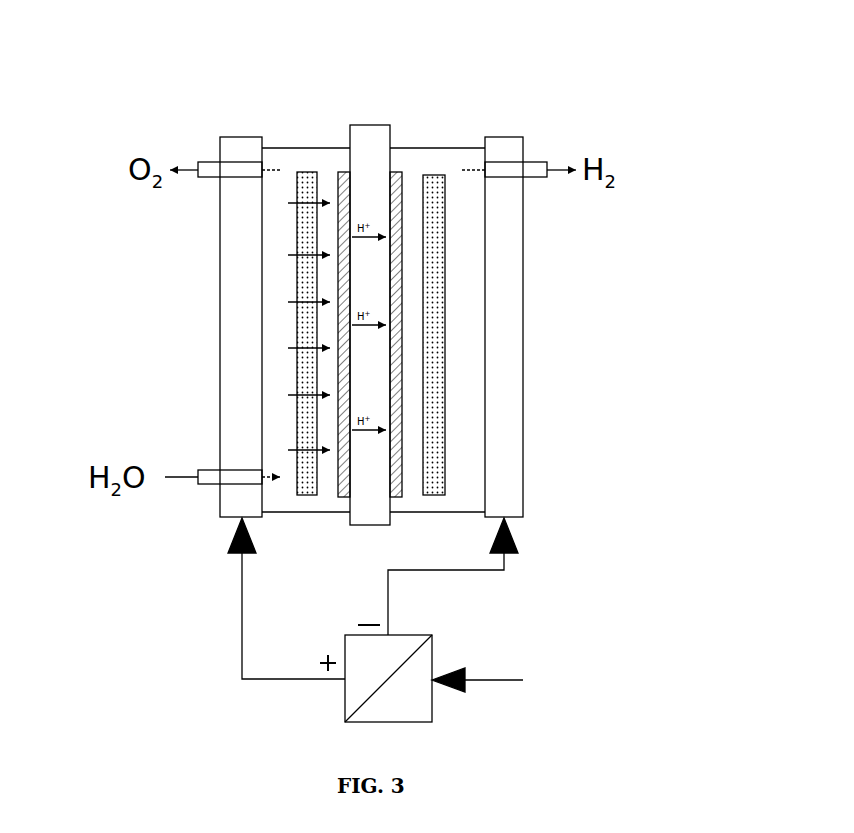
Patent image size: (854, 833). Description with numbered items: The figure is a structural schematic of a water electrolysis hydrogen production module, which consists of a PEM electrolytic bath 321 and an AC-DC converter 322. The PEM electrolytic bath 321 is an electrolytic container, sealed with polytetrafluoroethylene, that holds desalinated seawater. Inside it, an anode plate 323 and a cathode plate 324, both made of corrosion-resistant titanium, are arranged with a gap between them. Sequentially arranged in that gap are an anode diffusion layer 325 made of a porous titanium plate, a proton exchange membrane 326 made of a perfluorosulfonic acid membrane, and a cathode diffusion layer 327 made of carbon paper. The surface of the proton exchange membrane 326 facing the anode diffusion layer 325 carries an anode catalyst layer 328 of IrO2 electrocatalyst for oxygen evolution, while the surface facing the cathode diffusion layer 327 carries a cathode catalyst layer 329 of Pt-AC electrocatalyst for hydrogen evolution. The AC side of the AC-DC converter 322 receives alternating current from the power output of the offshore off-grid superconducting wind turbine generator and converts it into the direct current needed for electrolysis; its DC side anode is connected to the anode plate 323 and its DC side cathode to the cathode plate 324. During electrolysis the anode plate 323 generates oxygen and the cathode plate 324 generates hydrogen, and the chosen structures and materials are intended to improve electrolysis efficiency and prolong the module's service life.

The PEM electrolytic bath 321 is at (287, 442).
The AC-DC converter 322 is at (464, 620).
The anode plate 323 is at (151, 327).
The cathode plate 324 is at (592, 327).
The anode diffusion layer 325 is at (208, 247).
The proton exchange membrane 326 is at (363, 262).
The cathode diffusion layer 327 is at (537, 247).
The anode catalyst layer 328 is at (277, 248).
The cathode catalyst layer 329 is at (462, 248).